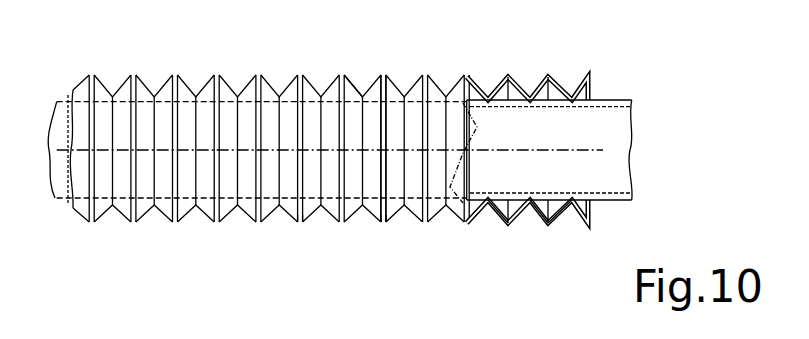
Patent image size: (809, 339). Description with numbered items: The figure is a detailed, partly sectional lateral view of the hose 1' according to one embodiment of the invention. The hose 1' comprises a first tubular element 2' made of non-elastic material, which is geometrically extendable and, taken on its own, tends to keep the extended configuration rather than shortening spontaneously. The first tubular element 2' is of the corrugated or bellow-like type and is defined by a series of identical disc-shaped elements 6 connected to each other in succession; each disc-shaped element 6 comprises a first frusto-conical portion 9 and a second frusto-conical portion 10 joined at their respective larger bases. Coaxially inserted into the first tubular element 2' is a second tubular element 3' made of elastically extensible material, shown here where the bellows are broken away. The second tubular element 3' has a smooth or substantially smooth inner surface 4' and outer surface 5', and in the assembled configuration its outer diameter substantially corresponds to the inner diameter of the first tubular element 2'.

The hose 1' is at (325, 199).
The disc-shaped elements 6 is at (300, 230).
The first frusto-conical portion 9 is at (375, 125).
The second frusto-conical portion 10 is at (393, 130).
The first tubular element 2' is at (555, 121).
The second tubular element 3' is at (588, 112).
The outer surface 5' is at (474, 248).
The inner surface 4' is at (542, 252).